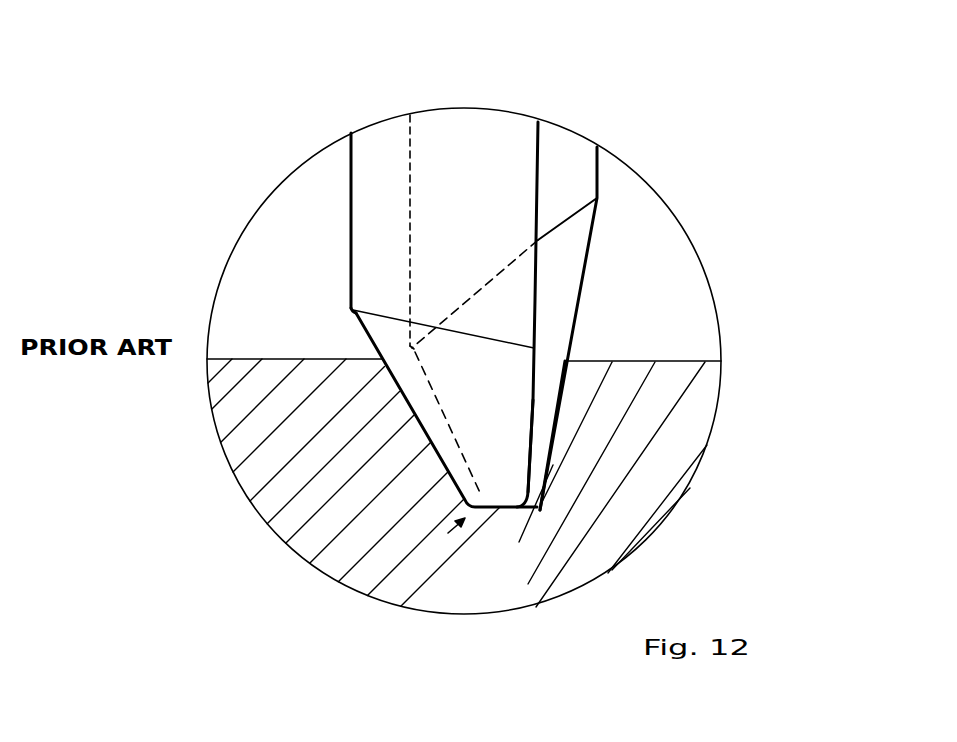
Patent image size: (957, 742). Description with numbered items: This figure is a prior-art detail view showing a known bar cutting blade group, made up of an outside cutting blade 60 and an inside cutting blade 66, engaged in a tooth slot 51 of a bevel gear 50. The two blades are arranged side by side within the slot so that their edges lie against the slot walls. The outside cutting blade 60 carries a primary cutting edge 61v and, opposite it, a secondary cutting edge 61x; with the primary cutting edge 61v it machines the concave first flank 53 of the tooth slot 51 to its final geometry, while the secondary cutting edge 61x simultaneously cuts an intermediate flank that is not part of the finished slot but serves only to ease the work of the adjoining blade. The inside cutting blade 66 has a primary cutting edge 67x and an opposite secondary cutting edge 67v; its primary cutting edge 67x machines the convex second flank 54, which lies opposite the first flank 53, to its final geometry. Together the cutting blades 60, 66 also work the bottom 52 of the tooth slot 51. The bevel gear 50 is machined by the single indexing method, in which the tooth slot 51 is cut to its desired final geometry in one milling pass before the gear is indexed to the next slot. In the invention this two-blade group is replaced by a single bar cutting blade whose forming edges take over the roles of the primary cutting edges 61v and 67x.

The bevel gear 50 is at (627, 532).
The tooth slot 51 is at (395, 600).
The bottom of the tooth slot 52 is at (514, 508).
The first flank 53 is at (275, 532).
The second flank 54 is at (553, 424).
The outside cutting blade 60 is at (465, 142).
The primary cutting edge 61v is at (396, 392).
The secondary cutting edge 61x is at (533, 450).
The inside cutting blade 66 is at (562, 165).
The secondary cutting edge 67v is at (418, 368).
The primary cutting edge 67x is at (557, 397).